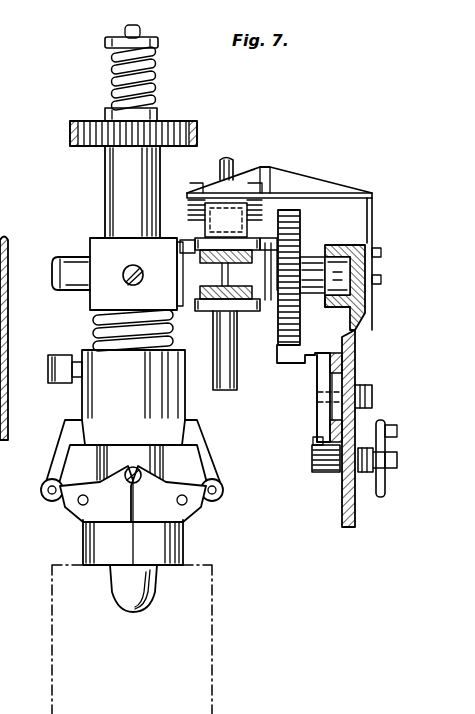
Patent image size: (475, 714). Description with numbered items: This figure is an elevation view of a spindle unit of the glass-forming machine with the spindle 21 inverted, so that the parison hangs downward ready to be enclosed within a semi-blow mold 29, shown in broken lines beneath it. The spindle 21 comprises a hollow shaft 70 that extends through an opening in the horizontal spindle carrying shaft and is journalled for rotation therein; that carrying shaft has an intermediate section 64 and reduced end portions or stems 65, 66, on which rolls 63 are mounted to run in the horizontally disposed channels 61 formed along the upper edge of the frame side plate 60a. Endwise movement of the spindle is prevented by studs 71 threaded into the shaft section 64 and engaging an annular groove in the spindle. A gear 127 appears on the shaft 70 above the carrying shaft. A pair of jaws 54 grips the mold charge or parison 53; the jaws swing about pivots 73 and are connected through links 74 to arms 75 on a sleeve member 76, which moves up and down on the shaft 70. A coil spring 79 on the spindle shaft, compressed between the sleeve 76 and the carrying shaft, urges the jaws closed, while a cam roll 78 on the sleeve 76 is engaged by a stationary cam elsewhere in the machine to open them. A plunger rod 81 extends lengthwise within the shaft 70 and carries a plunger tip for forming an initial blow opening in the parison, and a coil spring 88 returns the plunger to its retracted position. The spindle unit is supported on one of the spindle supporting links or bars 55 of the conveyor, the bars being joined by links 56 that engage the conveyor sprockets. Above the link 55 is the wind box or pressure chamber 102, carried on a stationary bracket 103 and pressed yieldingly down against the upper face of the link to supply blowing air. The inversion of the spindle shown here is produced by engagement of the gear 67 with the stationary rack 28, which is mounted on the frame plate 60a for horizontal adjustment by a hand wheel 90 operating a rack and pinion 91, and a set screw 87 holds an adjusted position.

The coil spring 88 is at (152, 62).
The plunger rod 81 is at (152, 80).
The gear 127 is at (72, 135).
The hollow shaft 70 is at (122, 195).
The intermediate section 64 is at (102, 247).
The studs 71 is at (142, 268).
The reduced end portion or stem 65 is at (68, 279).
The coil spring 79 is at (167, 326).
The sleeve member 76 is at (131, 391).
The cam roll 78 is at (72, 342).
The spindle 21 is at (74, 398).
The arms 75 is at (62, 455).
The links 74 is at (72, 495).
The pivots 73 is at (133, 467).
The jaws 54 is at (107, 540).
The mold charge or parison 53 is at (125, 595).
The semi-blow mold 29 is at (197, 585).
The spindle supporting link or bar 55 is at (243, 305).
The stationary bracket 103 is at (337, 173).
The box 102 is at (230, 213).
The links 56 is at (205, 293).
The gear 67 is at (298, 225).
The stationary rack 28 is at (290, 362).
The reduced end portion or stem 66 is at (318, 263).
The rolls 63 is at (337, 262).
The channels 61 is at (333, 303).
The side plate 60a is at (365, 317).
The set screw 87 is at (363, 386).
The hand wheel 90 is at (378, 427).
The rack and pinion 91 is at (318, 463).